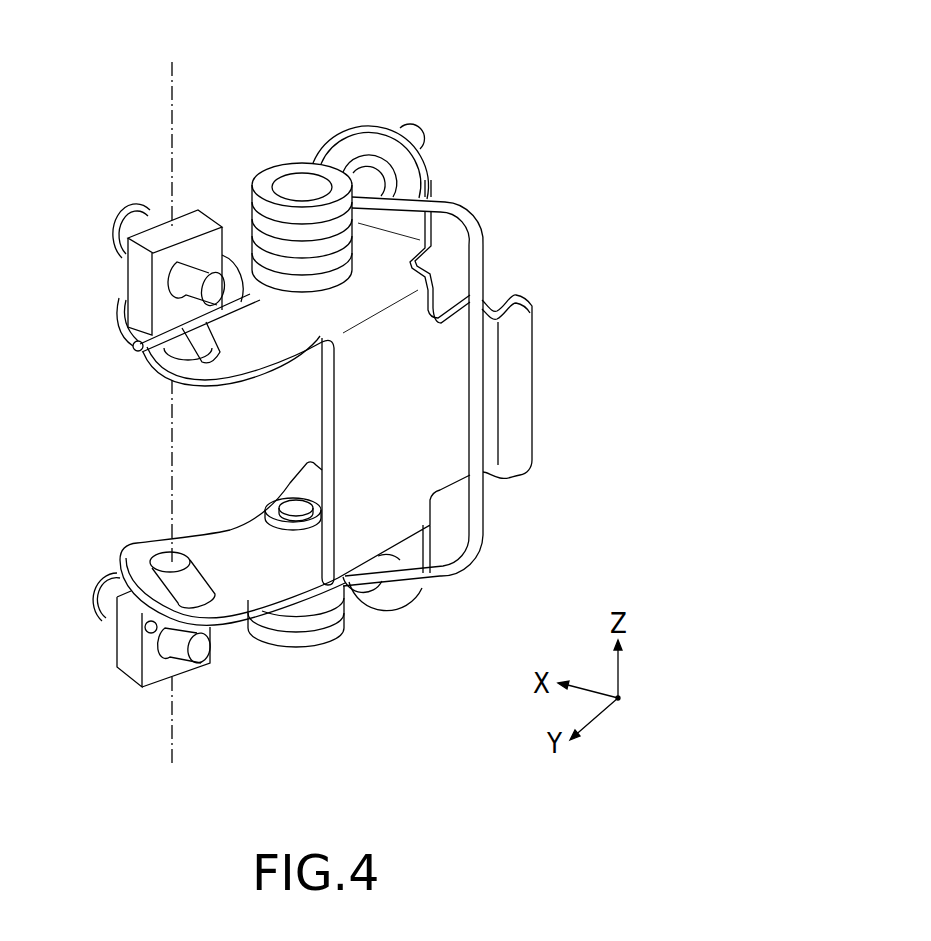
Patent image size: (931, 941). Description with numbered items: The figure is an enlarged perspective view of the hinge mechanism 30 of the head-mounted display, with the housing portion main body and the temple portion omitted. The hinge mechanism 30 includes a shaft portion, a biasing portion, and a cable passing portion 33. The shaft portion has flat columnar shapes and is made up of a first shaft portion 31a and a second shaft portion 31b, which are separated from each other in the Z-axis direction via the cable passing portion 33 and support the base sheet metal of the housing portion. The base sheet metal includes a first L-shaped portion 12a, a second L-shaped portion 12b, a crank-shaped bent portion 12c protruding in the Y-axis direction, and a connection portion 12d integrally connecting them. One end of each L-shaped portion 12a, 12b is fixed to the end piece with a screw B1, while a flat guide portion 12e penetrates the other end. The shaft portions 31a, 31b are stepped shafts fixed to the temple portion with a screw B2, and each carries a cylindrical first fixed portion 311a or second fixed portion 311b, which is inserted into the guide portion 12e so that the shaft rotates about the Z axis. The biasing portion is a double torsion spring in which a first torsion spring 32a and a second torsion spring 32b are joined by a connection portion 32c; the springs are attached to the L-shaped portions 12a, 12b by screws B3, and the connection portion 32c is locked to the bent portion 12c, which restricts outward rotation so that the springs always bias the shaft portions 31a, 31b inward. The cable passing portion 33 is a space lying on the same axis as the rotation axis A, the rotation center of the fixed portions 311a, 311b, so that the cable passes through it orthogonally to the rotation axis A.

The rotation axis A is at (173, 112).
The first L-shaped portion 12a is at (232, 287).
The second L-shaped portion 12b is at (217, 630).
The bent portion 12c is at (518, 377).
The connection portion 12d is at (405, 445).
The guide portion 12e is at (200, 362).
The hinge mechanism 30 is at (513, 157).
The first shaft portion 31a is at (127, 232).
The second shaft portion 31b is at (132, 667).
The first fixed portion 311a is at (153, 358).
The second fixed portion 311b is at (158, 553).
The first torsion spring 32a is at (407, 197).
The second torsion spring 32b is at (432, 578).
The connection portion 32c is at (478, 287).
The cable passing portion 33 is at (185, 472).
The screw B1 is at (378, 163).
The screw B2 is at (144, 240).
The screw B3 is at (270, 183).